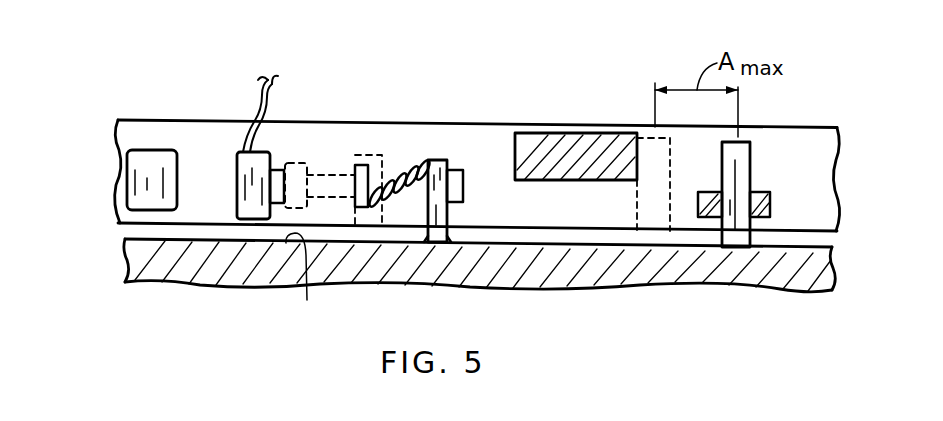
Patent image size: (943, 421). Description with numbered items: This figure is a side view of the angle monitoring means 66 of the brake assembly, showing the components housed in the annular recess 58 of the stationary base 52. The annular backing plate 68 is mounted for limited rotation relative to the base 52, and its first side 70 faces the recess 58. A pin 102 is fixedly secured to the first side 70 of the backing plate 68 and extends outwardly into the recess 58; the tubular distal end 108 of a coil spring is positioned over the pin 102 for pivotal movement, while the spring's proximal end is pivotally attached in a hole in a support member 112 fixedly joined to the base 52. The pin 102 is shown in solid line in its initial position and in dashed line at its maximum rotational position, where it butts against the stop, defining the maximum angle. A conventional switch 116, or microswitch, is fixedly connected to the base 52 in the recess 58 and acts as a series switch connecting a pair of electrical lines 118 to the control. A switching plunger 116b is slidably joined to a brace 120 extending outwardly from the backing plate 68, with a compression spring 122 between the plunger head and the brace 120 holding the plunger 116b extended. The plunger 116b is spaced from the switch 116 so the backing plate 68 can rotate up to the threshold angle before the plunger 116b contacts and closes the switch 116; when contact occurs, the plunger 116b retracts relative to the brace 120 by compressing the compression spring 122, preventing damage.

The stationary base 52 is at (489, 118).
The annular recess 58 is at (333, 130).
The angle monitoring means 66 is at (410, 155).
The annular backing plate 68 is at (125, 242).
The first side 70 is at (307, 300).
The pin 102 is at (637, 203).
The tubular distal end 108 is at (770, 204).
The support member 112 is at (155, 160).
The switch 116 is at (237, 165).
The switching plunger 116b is at (370, 160).
The electrical lines 118 is at (276, 88).
The brace 120 is at (450, 213).
The compression spring 122 is at (425, 157).